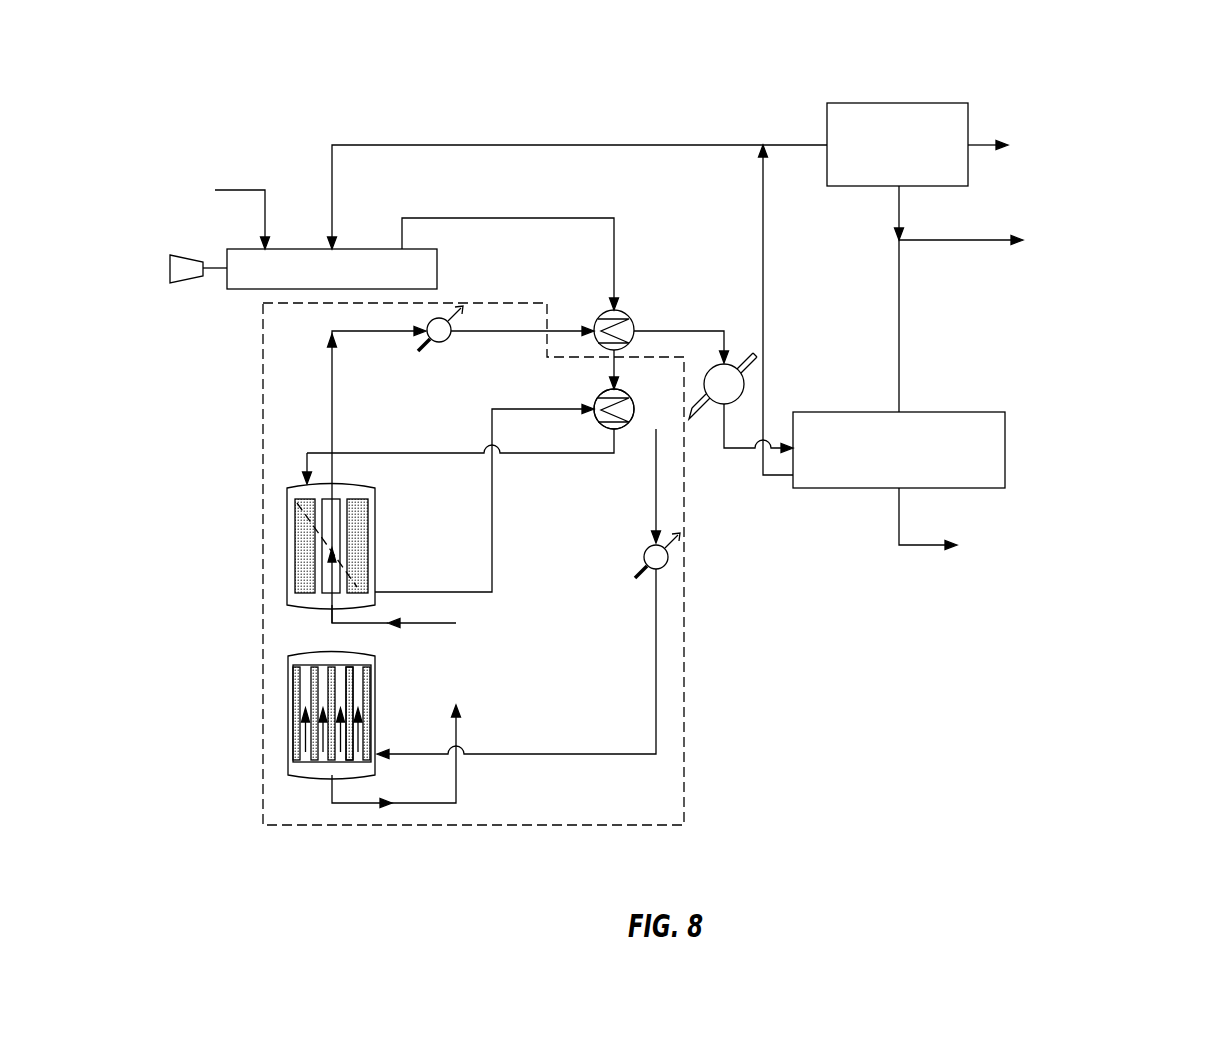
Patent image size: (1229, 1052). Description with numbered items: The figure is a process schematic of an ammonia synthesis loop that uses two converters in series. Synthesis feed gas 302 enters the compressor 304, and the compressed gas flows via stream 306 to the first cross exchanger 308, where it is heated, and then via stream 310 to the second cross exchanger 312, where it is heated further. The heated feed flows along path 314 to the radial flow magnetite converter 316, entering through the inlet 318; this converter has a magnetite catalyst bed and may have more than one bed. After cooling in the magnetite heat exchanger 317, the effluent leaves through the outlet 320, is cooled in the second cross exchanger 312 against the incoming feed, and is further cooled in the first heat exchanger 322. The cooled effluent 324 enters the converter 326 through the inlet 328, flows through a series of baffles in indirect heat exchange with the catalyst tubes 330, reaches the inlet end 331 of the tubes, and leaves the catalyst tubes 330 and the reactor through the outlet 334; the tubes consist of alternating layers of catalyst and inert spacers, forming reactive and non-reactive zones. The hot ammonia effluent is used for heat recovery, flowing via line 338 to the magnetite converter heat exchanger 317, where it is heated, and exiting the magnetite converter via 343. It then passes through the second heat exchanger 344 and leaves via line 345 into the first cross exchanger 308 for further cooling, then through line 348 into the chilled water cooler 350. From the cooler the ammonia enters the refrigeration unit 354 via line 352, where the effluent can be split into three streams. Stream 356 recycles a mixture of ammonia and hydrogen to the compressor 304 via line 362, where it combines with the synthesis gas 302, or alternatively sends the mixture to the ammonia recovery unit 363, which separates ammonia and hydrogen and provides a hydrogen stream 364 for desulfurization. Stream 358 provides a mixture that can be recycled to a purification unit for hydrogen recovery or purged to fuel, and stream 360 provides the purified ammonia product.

The synthesis feed gas 302 is at (180, 143).
The compressor 304 is at (237, 290).
The stream 306 is at (428, 218).
The first cross exchanger 308 is at (630, 314).
The stream 310 is at (612, 369).
The second cross exchanger 312 is at (607, 427).
The path 314 is at (407, 453).
The radial flow magnetite converter 316 is at (376, 511).
The magnetite heat exchanger 317 is at (338, 498).
The inlet 318 is at (306, 463).
The outlet 320 is at (407, 592).
The first heat exchanger 322 is at (645, 556).
The cooled effluent 324 is at (568, 754).
The converter 326 is at (377, 691).
The inlet 328 is at (377, 752).
The catalyst tubes 330 is at (293, 749).
The inlet end 331 is at (350, 666).
The outlet 334 is at (332, 797).
The line 338 is at (331, 618).
The ammonia stream exit 343 is at (333, 417).
The second heat exchanger 344 is at (446, 342).
The line 345 is at (508, 330).
The line 348 is at (657, 331).
The chilled water cooler 350 is at (745, 384).
The line 352 is at (755, 450).
The refrigeration unit 354 is at (982, 412).
The stream 356 is at (763, 284).
The stream 358 is at (899, 340).
The stream 360 is at (898, 505).
The line 362 is at (372, 144).
The ammonia recovery unit 363 is at (852, 103).
The hydrogen stream 364 is at (1050, 128).